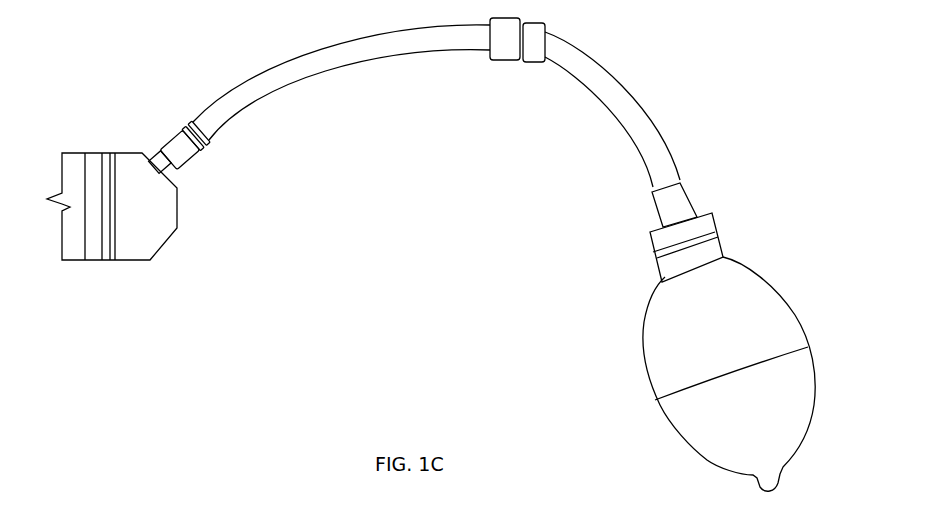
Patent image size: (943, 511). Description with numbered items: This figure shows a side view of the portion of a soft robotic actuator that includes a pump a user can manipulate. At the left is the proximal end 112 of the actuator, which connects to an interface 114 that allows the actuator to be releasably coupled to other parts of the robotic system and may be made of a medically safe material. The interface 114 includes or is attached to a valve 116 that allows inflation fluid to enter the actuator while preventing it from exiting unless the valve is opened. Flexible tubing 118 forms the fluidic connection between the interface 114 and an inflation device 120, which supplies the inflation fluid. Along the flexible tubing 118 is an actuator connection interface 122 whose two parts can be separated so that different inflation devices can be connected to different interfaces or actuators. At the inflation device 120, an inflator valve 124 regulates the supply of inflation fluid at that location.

The proximal end 112 is at (65, 136).
The interface 114 is at (136, 245).
The valve 116 is at (183, 162).
The flexible tubing 118 is at (227, 98).
The inflation device 120 is at (657, 367).
The actuator connection interface 122 is at (528, 50).
The inflator valve 124 is at (710, 218).